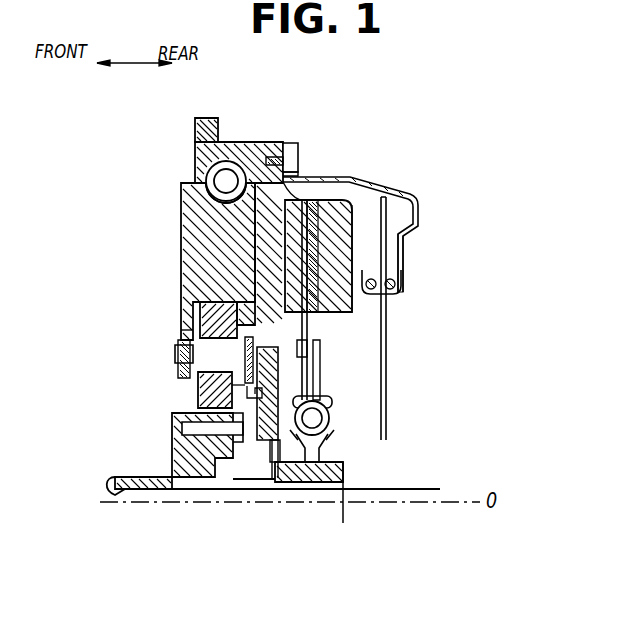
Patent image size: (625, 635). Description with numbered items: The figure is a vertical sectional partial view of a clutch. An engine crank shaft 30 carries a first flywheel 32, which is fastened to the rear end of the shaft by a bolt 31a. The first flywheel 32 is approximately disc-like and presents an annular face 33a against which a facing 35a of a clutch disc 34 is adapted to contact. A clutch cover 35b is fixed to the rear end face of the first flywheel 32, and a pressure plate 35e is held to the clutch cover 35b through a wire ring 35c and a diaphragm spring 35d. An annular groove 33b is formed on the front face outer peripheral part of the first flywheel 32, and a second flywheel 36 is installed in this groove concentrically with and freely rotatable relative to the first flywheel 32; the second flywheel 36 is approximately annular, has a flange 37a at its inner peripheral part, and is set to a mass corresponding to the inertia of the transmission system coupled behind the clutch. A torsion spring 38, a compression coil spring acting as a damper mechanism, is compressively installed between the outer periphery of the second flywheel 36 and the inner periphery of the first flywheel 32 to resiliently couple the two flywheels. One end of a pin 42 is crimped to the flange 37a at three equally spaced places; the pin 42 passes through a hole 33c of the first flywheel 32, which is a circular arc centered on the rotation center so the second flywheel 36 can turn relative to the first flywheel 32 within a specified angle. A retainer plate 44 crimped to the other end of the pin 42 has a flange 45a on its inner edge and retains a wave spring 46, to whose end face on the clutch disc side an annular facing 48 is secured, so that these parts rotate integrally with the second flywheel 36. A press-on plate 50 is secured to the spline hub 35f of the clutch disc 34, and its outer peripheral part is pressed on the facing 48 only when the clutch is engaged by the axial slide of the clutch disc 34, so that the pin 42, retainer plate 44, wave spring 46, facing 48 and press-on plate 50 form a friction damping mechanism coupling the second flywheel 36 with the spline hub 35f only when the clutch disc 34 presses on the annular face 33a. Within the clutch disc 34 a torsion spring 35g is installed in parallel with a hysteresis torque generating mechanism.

The engine crank shaft 30 is at (147, 477).
The bolt 31a is at (207, 489).
The first flywheel 32 is at (263, 150).
The annular face 33a is at (318, 177).
The annular groove 33b is at (181, 240).
The hole 33c is at (232, 390).
The clutch disc 34 is at (336, 366).
The facing 35a is at (315, 298).
The clutch cover 35b is at (401, 192).
The wire ring 35c is at (376, 271).
The diaphragm spring 35d is at (386, 385).
The pressure plate 35e is at (340, 242).
The spline hub 35f is at (335, 470).
The torsion spring 35g is at (325, 418).
The second flywheel 36 is at (215, 275).
The flange 37a is at (185, 337).
The torsion spring 38 is at (212, 172).
The pin 42 is at (205, 372).
The retainer plate 44 is at (176, 355).
The flange 45a is at (265, 442).
The wave spring 46 is at (212, 408).
The facing 48 is at (262, 442).
The press-on plate 50 is at (270, 460).